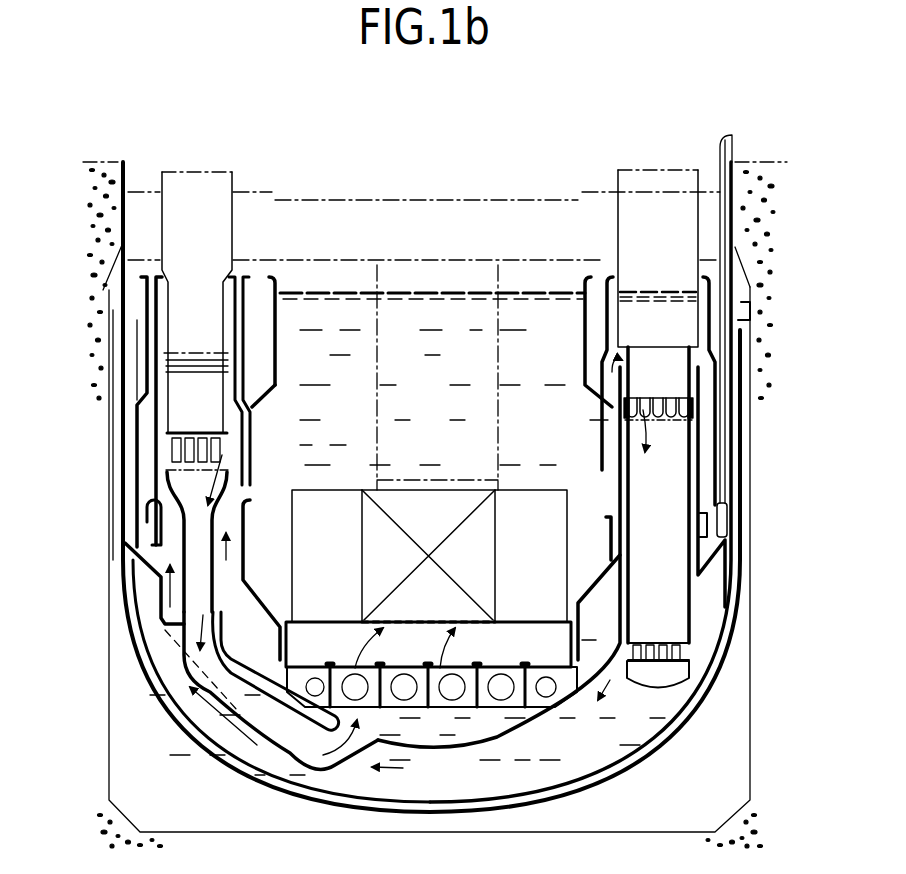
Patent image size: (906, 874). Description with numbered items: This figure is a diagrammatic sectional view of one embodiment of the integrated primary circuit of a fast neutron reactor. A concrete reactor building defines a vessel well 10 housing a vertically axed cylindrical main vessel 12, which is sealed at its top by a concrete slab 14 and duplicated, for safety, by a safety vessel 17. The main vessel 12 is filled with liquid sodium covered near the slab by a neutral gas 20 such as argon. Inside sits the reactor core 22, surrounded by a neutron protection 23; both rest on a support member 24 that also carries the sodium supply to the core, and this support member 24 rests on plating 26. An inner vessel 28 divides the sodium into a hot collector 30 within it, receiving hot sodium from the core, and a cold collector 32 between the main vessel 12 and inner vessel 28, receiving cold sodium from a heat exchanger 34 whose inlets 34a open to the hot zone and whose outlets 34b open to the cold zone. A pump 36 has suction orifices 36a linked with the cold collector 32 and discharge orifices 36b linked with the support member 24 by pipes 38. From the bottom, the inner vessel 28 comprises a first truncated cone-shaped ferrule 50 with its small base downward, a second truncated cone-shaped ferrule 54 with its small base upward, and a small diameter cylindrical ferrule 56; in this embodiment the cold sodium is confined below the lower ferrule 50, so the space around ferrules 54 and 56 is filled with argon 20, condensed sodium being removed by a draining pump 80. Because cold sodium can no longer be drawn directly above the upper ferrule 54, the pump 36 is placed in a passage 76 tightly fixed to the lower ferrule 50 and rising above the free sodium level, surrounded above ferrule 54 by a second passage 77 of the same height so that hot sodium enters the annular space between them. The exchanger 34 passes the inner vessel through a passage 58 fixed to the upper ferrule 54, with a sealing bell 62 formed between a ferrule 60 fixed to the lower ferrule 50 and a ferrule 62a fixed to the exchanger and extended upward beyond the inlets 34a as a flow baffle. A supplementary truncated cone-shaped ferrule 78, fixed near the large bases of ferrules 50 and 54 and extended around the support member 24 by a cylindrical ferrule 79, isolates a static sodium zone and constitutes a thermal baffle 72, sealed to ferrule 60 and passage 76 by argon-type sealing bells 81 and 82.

The vessel well 10 is at (423, 505).
The main vessel 12 is at (458, 804).
The concrete slab 14 is at (416, 228).
The safety vessel 17 is at (163, 723).
The neutral gas 20 is at (324, 277).
The reactor core 22 is at (418, 528).
The neutron protection 23 is at (312, 578).
The support member 24 is at (535, 640).
The plating 26 is at (382, 688).
The inner vessel 28 is at (610, 660).
The hot collector 30 is at (452, 303).
The cold collector 32 is at (573, 753).
The heat exchanger 34 is at (673, 602).
The inlets 34a is at (600, 325).
The outlets 34b is at (683, 652).
The pump 36 is at (183, 488).
The suction orifices 36a is at (187, 453).
The discharge orifices 36b is at (190, 593).
The pipes 38 is at (186, 668).
The first truncated cone-shaped ferrule 50 is at (122, 669).
The second truncated cone-shaped ferrule 54 is at (280, 406).
The small diameter cylindrical ferrule 56 is at (280, 329).
The passage 58 is at (705, 318).
The ferrule 60 is at (700, 453).
The sealing bell 62 is at (700, 423).
The ferrule 62a is at (603, 433).
The thermal baffle 72 is at (253, 580).
The passage 76 is at (240, 450).
The second passage 77 is at (145, 367).
The supplementary truncated cone-shaped ferrule 78 is at (598, 600).
The cylindrical ferrule 79 is at (583, 657).
The draining pump 80 is at (724, 518).
The sealing bell 81 is at (607, 518).
The sealing bell 82 is at (257, 497).